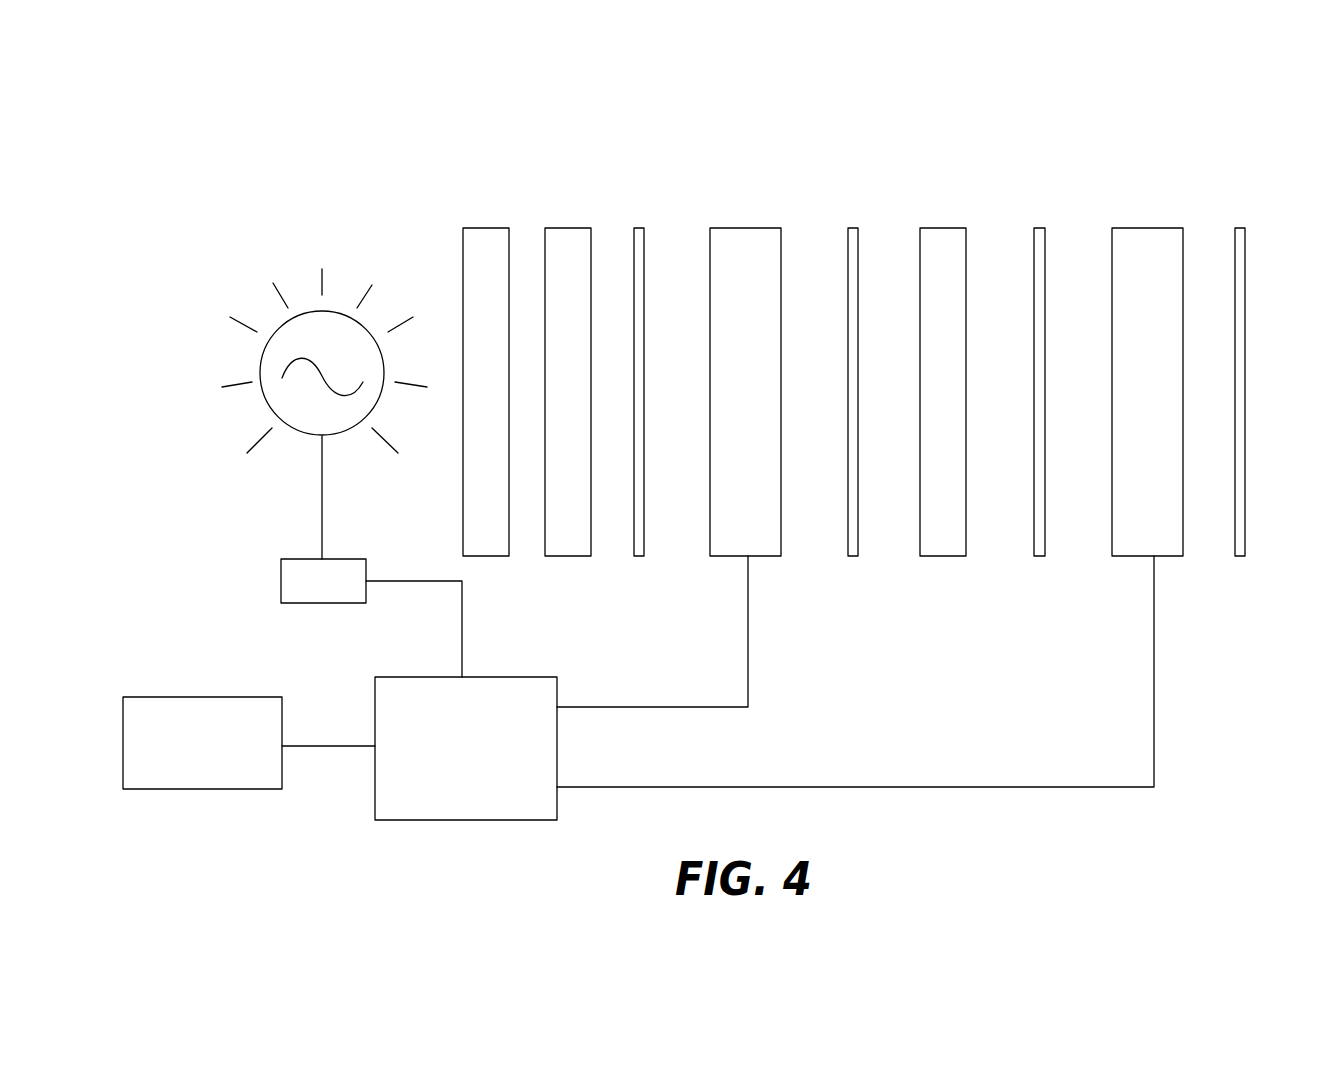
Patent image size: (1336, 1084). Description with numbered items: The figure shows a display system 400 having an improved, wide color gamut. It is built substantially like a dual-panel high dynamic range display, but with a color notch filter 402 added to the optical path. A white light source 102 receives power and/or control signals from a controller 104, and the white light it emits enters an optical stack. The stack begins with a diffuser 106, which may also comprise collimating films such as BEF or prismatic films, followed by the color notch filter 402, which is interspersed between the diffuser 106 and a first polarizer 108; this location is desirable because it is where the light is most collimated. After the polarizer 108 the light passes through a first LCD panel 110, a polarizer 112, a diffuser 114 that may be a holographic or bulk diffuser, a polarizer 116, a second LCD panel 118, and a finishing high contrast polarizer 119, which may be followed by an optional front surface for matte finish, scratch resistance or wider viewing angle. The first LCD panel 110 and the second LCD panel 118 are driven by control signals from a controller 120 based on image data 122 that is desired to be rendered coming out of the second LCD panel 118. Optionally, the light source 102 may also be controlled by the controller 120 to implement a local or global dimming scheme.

The display system 400 is at (1052, 133).
The white light source 102 is at (278, 326).
The controller 104 is at (281, 583).
The diffuser 106 is at (483, 228).
The color notch filter 402 is at (571, 228).
The polarizer 108 is at (640, 228).
The first LCD panel 110 is at (738, 228).
The polarizer 112 is at (852, 228).
The diffuser 114 is at (945, 228).
The polarizer 116 is at (1041, 228).
The second LCD panel 118 is at (1155, 228).
The high contrast polarizer 119 is at (1239, 228).
The controller 120 is at (422, 820).
The image data 122 is at (235, 789).